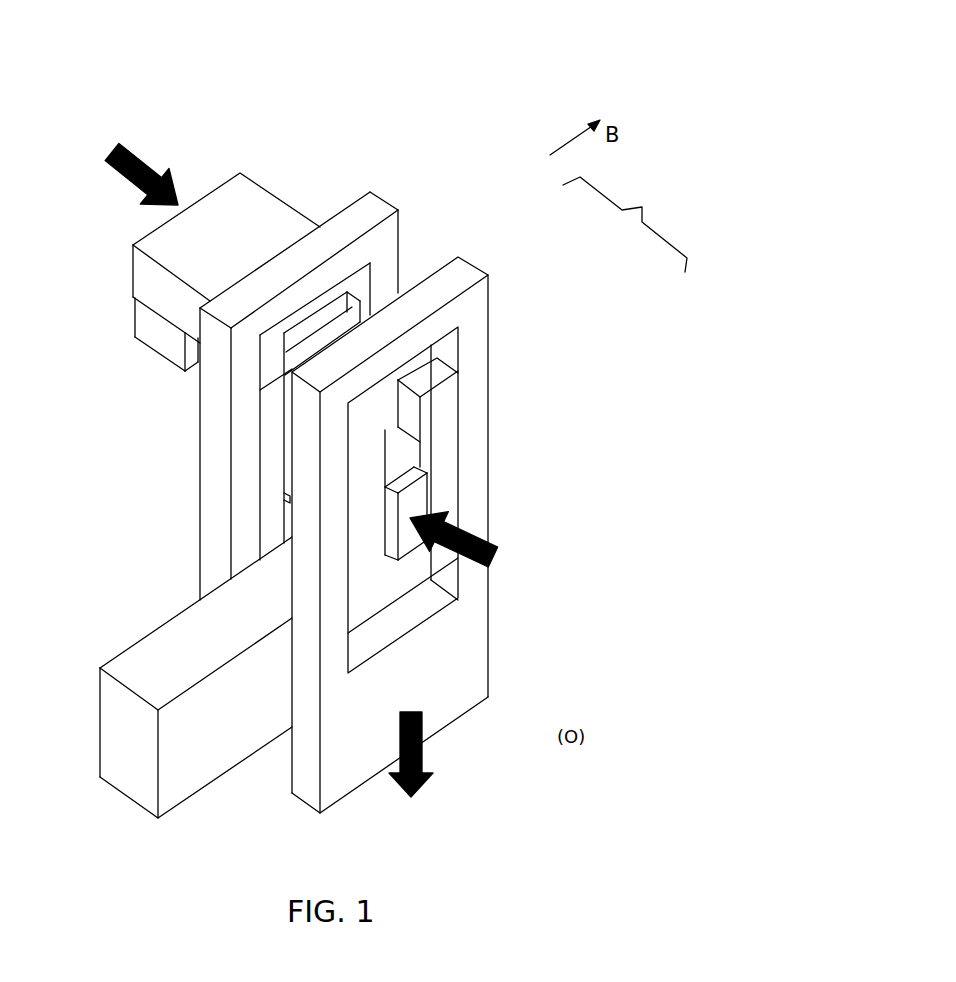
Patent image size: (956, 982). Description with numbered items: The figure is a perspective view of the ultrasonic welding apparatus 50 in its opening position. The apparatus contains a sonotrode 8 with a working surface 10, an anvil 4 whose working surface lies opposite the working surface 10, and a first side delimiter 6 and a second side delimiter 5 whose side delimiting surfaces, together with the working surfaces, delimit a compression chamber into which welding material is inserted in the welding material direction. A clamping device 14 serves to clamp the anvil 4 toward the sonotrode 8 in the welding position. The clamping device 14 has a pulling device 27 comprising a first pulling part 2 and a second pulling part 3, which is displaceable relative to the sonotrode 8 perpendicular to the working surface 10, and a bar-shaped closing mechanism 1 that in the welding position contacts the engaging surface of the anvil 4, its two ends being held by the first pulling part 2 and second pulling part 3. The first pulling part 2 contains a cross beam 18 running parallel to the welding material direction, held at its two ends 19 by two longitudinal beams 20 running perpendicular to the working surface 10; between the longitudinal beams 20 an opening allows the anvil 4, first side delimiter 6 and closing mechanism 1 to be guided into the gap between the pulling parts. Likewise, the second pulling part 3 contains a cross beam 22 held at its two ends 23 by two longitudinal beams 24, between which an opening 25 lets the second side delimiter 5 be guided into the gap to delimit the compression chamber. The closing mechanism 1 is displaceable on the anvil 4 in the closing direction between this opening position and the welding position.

The closing mechanism 1 is at (378, 183).
The first pulling part 2 is at (481, 218).
The second pulling part 3 is at (484, 535).
The anvil 4 is at (136, 347).
The second side delimiter 5 is at (501, 492).
The first side delimiter 6 is at (182, 446).
The sonotrode 8 is at (131, 592).
The working surface of the sonotrode 10 is at (277, 565).
The clamping device 14 is at (294, 180).
The cross beam of the first pulling part 18 is at (280, 285).
The ends of the cross beam 19 is at (370, 215).
The longitudinal beams of the first pulling part 20 is at (387, 290).
The cross beam of the second pulling part 22 is at (427, 337).
The ends of the cross beam 23 is at (477, 268).
The longitudinal beams of the second pulling part 24 is at (337, 472).
The opening 25 is at (453, 487).
The pulling device 27 is at (625, 222).
The ultrasonic welding apparatus 50 is at (544, 46).